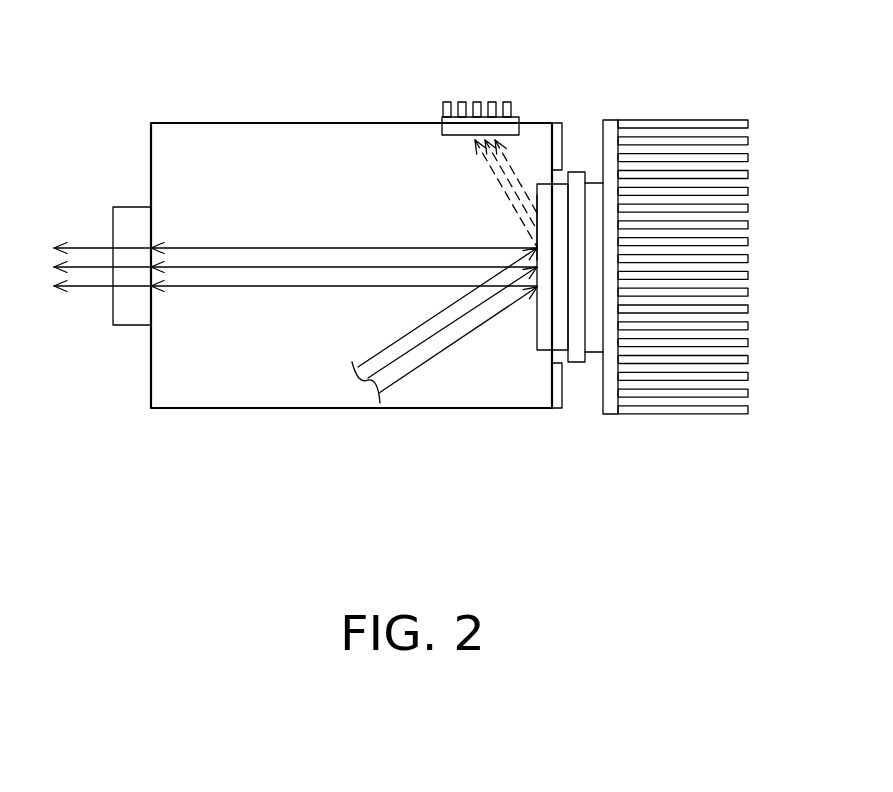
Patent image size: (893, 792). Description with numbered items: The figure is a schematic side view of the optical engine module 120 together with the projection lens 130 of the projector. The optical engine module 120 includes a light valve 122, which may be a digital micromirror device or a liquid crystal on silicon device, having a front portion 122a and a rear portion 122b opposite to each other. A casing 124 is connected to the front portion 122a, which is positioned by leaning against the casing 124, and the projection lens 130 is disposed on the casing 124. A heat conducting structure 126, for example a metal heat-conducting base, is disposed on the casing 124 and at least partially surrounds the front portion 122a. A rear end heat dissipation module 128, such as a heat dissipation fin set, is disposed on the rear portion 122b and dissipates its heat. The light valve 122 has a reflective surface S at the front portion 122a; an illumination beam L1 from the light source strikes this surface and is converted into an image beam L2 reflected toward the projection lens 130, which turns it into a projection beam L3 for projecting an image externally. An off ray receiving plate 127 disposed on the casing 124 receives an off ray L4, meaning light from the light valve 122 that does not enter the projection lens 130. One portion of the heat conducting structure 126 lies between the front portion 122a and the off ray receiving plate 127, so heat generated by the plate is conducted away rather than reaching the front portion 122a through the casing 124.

The optical engine module 120 is at (123, 92).
The light valve 122 is at (615, 480).
The front portion 122a is at (547, 338).
The rear portion 122b is at (571, 356).
The casing 124 is at (210, 122).
The heat conducting structure 126 is at (555, 122).
The off ray receiving plate 127 is at (478, 128).
The rear end heat dissipation module 128 is at (702, 125).
The projection lens 130 is at (118, 207).
The illumination beam L1 is at (412, 331).
The image beam L2 is at (306, 247).
The projection beam L3 is at (78, 247).
The off ray L4 is at (505, 184).
The reflective surface S is at (535, 204).